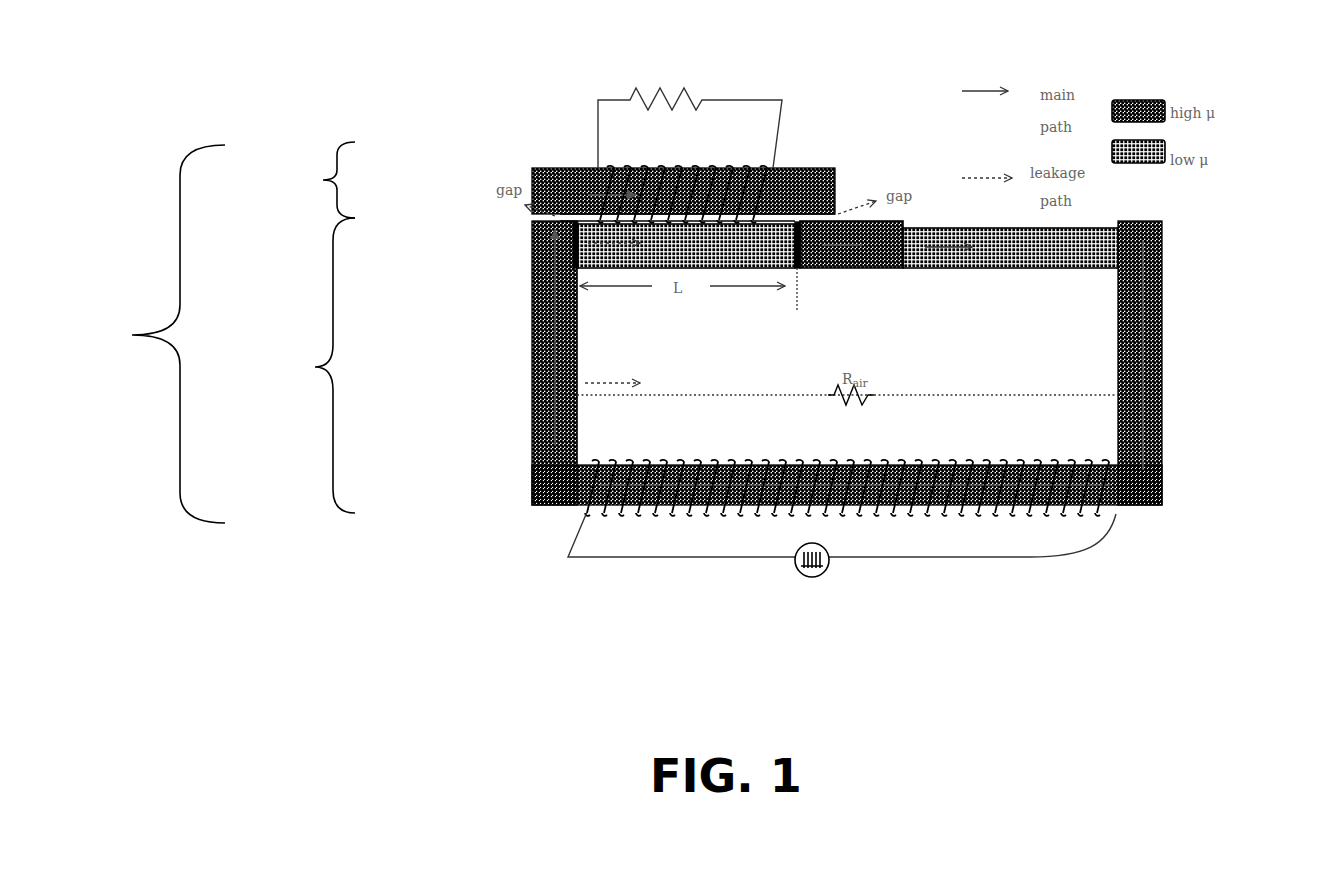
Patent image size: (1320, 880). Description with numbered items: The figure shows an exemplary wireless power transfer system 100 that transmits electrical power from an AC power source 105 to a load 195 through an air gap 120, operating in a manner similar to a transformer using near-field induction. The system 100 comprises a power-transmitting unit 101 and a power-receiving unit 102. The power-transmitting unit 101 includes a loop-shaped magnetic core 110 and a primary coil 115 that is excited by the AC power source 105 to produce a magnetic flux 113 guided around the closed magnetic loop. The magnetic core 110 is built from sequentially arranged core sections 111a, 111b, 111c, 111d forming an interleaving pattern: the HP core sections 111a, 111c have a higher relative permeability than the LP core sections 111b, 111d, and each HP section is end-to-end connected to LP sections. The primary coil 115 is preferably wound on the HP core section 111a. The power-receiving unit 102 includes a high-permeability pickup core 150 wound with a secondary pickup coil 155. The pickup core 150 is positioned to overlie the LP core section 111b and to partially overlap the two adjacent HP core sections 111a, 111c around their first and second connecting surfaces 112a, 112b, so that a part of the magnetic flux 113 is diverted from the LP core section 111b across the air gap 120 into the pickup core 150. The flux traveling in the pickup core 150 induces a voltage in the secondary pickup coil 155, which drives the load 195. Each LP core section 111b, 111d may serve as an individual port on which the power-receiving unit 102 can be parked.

The WPT system 100 is at (154, 334).
The power-transmitting unit 101 is at (311, 365).
The power-receiving unit 102 is at (312, 180).
The AC power source 105 is at (825, 575).
The magnetic core 110 is at (527, 452).
The HP core section 111a is at (543, 383).
The LP core section 111b is at (717, 262).
The HP core section 111c is at (876, 268).
The LP core section 111d is at (1048, 263).
The first connecting surface 112a is at (570, 260).
The second connecting surface 112b is at (803, 264).
The magnetic flux 113 is at (553, 418).
The primary coil 115 is at (992, 511).
The air gap 120 is at (556, 218).
The pickup core 150 is at (557, 190).
The secondary pickup coil 155 is at (740, 162).
The load 195 is at (657, 98).